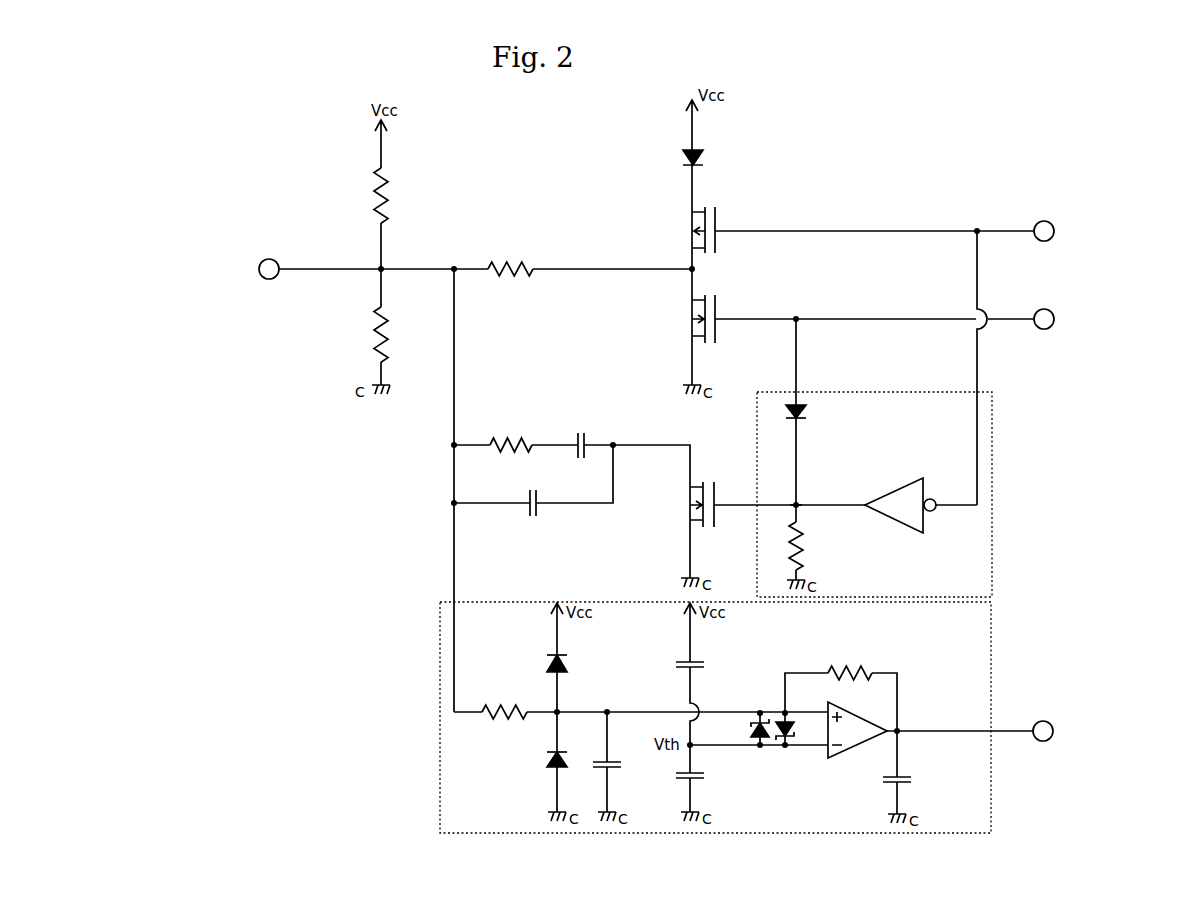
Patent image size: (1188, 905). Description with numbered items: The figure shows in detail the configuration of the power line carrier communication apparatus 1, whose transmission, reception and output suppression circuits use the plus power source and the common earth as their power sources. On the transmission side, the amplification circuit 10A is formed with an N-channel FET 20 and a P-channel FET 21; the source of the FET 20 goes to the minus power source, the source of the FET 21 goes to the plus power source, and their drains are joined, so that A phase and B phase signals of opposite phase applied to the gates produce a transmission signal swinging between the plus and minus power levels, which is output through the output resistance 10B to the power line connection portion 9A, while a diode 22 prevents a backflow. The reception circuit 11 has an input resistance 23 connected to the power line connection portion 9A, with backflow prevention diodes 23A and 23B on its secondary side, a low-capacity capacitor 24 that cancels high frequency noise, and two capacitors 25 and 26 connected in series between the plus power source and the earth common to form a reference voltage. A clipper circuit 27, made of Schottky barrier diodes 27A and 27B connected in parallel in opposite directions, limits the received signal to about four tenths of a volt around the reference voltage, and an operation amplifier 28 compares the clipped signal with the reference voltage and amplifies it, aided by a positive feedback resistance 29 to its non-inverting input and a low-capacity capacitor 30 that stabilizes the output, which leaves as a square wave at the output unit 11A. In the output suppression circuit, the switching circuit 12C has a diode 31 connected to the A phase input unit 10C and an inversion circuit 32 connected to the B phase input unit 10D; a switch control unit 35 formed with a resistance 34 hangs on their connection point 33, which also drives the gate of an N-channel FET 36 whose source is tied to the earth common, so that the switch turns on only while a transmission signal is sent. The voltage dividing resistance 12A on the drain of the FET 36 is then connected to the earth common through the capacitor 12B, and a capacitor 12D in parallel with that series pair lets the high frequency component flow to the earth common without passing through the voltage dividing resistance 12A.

The power line carrier communication apparatus 1 is at (307, 488).
The power line connection portion 9A is at (260, 261).
The amplification circuit 10A is at (828, 193).
The output resistance 10B is at (514, 262).
The input unit of the A phase signal 10C is at (1053, 316).
The input unit of the B phase signal 10D is at (1053, 228).
The reception circuit 11 is at (993, 675).
The output unit 11A is at (1043, 742).
The voltage dividing resistance 12A is at (512, 437).
The capacitor 12B is at (588, 433).
The switching circuit 12C is at (1060, 411).
The capacitor 12D is at (536, 518).
The FET 20 is at (717, 304).
The FET 21 is at (717, 218).
The diode 22 is at (683, 156).
The input resistance 23 is at (500, 716).
The backflow prevention diode 23A is at (548, 662).
The backflow prevention diode 23B is at (548, 765).
The capacitor 24 is at (612, 760).
The capacitor 25 is at (680, 661).
The capacitor 26 is at (680, 775).
The clipper circuit 27 is at (808, 790).
The Schottky barrier diode 27A is at (757, 750).
The Schottky barrier diode 27B is at (790, 752).
The operation amplifier 28 is at (870, 721).
The positive feedback resistance 29 is at (868, 672).
The capacitor 30 is at (905, 776).
The diode 31 is at (808, 413).
The inversion circuit 32 is at (900, 533).
The connection point 33 is at (798, 503).
The resistance 34 is at (802, 551).
The switch control unit 35 is at (994, 458).
The FET 36 is at (727, 481).